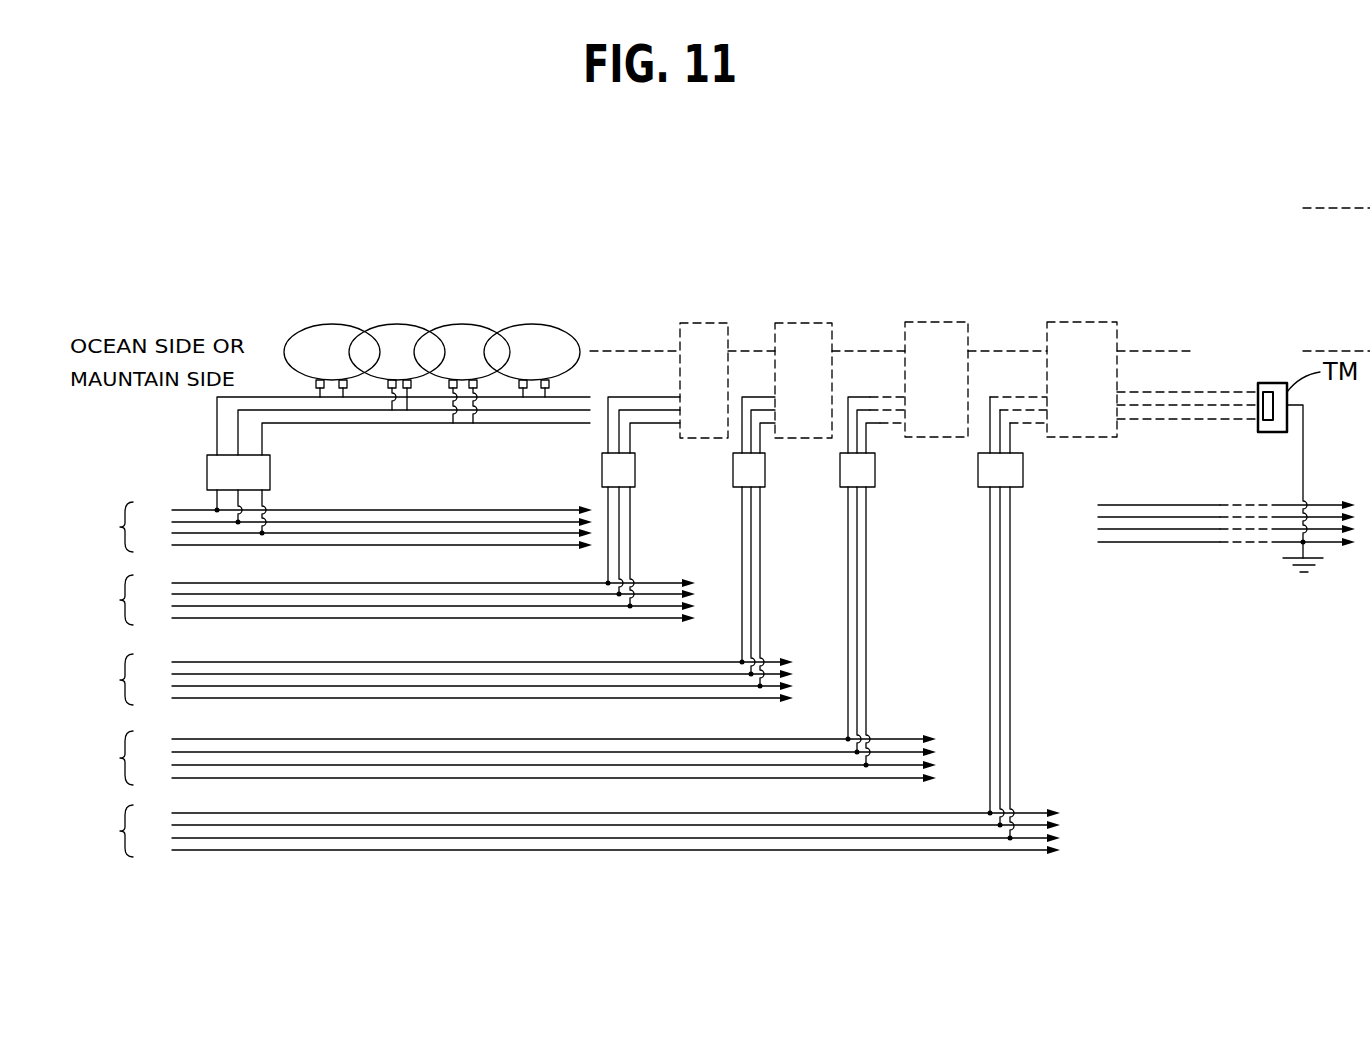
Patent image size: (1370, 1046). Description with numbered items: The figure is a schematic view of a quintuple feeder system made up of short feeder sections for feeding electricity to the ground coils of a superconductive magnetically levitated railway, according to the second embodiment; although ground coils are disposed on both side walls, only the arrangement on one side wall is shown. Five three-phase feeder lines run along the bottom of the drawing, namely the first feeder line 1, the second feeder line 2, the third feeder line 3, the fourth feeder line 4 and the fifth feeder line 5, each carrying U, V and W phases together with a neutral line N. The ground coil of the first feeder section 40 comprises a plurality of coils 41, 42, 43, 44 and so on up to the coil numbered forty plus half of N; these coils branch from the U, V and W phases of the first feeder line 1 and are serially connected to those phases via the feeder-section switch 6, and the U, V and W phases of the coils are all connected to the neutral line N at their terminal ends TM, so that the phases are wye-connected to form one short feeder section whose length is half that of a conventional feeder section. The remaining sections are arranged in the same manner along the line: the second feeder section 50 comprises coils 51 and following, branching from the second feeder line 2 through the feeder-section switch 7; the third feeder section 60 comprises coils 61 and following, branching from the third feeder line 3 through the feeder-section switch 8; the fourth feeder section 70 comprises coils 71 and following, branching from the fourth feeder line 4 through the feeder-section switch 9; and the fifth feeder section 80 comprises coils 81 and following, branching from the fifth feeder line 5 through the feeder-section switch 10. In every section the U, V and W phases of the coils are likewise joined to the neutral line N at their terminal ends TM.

The first feeder line 1 is at (342, 527).
The second feeder line 2 is at (393, 600).
The third feeder line 3 is at (442, 679).
The fourth feeder line 4 is at (514, 758).
The fifth feeder line 5 is at (576, 831).
The feeder-section switch 6 is at (195, 478).
The feeder-section switch 7 is at (635, 472).
The feeder-section switch 8 is at (765, 472).
The feeder-section switch 9 is at (875, 472).
The feeder-section switch 10 is at (1023, 472).
The first feeder section 40 is at (274, 317).
The coil 41 is at (345, 323).
The coil 42 is at (417, 323).
The coil 43 is at (483, 323).
The coil 44 is at (558, 323).
The second feeder section 50 is at (705, 314).
The coil 51 is at (750, 332).
The third feeder section 60 is at (803, 314).
The coil 61 is at (858, 332).
The fourth feeder section 70 is at (930, 314).
The coil 71 is at (1001, 332).
The fifth feeder section 80 is at (1073, 314).
The coil 81 is at (1146, 332).